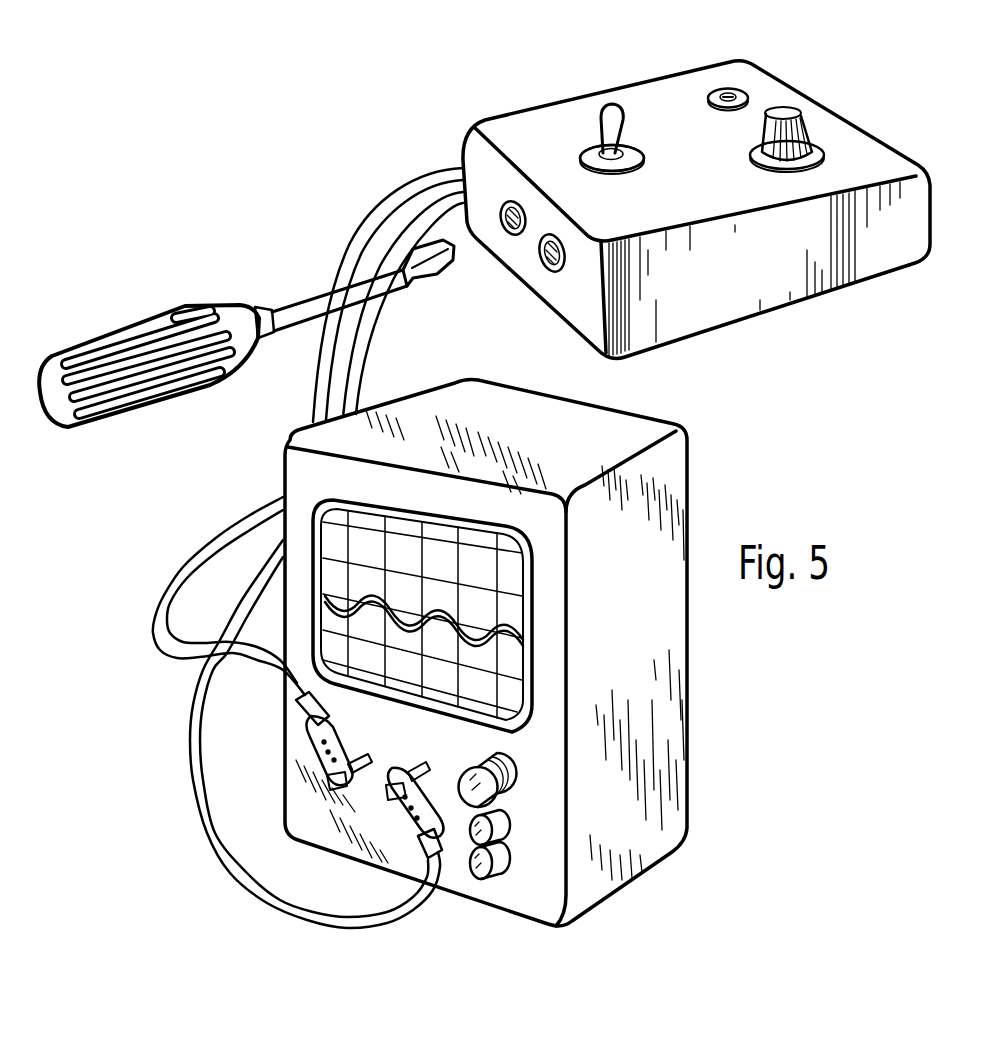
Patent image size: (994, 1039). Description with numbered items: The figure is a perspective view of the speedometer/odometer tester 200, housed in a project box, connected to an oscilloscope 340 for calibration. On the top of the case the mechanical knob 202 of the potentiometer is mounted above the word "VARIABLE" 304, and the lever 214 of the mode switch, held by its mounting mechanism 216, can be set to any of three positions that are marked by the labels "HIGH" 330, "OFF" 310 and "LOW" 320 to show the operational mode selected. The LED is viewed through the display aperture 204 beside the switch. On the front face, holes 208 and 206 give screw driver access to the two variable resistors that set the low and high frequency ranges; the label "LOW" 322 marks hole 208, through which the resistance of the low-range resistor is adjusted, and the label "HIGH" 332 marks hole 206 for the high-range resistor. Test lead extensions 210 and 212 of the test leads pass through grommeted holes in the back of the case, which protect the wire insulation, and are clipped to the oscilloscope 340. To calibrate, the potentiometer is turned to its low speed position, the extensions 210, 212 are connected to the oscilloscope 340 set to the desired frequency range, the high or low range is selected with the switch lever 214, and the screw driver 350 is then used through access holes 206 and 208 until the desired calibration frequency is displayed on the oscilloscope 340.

The tester 200 is at (662, 193).
The mechanical knob 202 is at (812, 124).
The display aperture 204 is at (729, 95).
The access hole 206 is at (543, 268).
The access hole 208 is at (500, 228).
The test lead extension 210 is at (160, 622).
The test lead extension 212 is at (190, 782).
The switch lever 214 is at (606, 102).
The mounting mechanism 216 is at (580, 157).
The VARIABLE legend 304 is at (858, 165).
The OFF label 310 is at (664, 133).
The LOW label 320 is at (678, 190).
The LOW label 322 is at (493, 258).
The HIGH legend (switch) 330 is at (567, 142).
The HIGH label 332 is at (533, 283).
The oscilloscope 340 is at (690, 703).
The screwdriver 350 is at (298, 305).